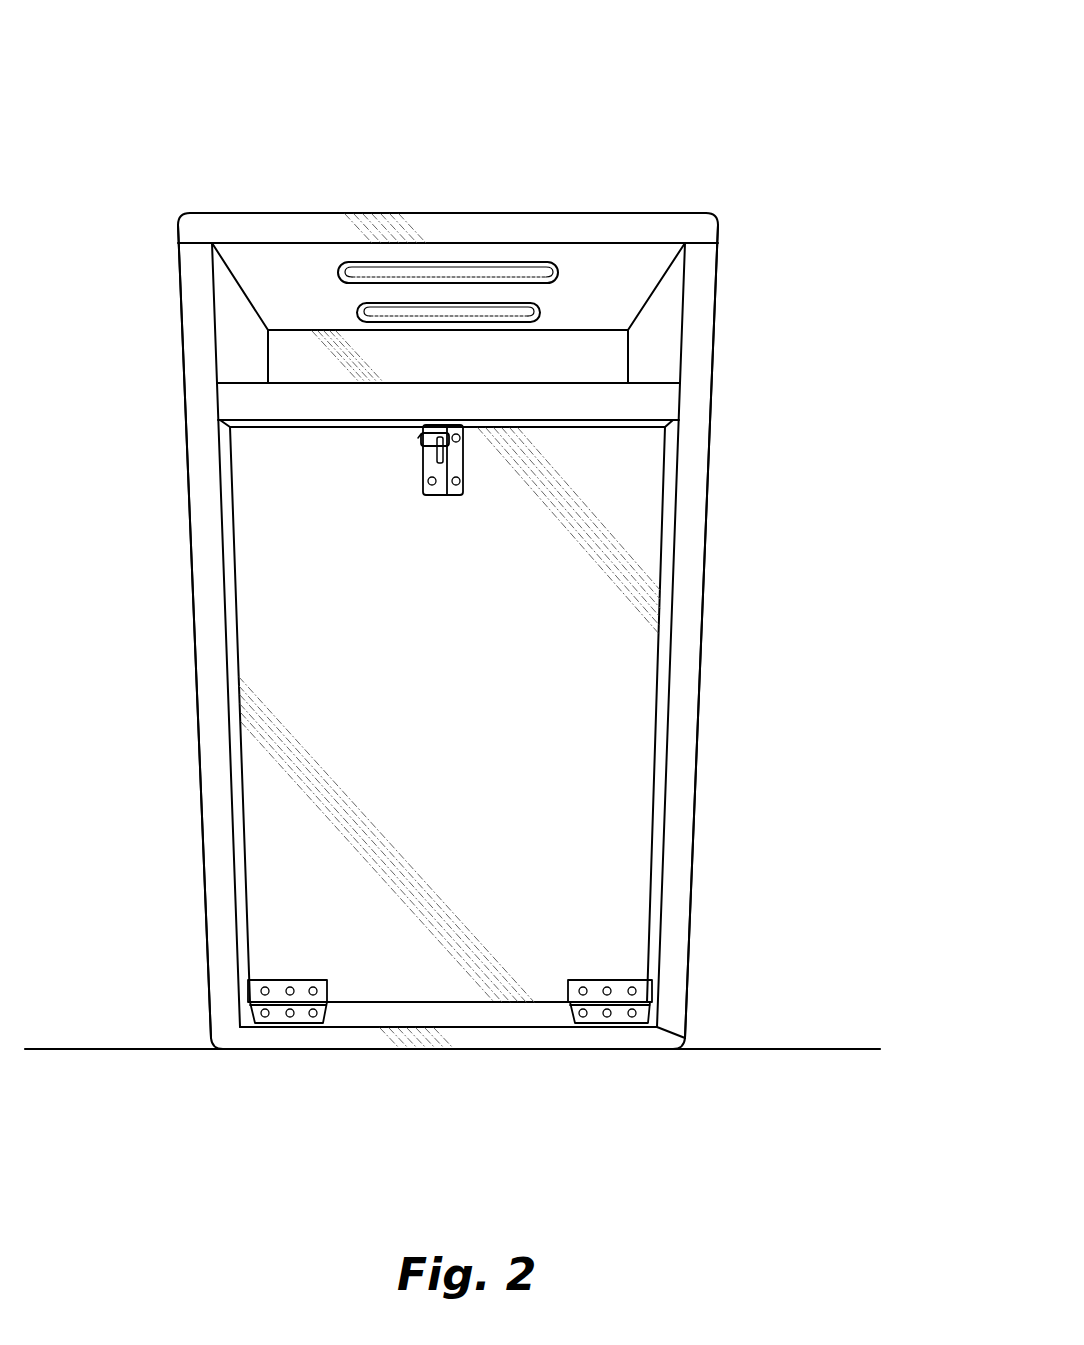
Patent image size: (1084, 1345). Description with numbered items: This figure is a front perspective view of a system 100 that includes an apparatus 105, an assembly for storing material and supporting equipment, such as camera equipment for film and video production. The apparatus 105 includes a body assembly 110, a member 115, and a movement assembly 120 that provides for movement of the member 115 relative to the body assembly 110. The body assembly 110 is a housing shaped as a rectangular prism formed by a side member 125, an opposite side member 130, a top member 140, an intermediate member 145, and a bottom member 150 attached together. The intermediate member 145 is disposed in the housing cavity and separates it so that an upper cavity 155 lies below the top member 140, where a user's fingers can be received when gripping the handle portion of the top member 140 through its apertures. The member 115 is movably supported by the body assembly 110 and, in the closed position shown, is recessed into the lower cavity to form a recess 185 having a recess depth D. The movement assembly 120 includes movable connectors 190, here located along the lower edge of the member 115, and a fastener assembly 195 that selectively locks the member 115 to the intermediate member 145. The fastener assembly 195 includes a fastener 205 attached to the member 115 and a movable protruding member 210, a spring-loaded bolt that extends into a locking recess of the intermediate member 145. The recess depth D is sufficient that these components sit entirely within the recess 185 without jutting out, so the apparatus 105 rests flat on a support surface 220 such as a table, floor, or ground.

The system 100 is at (452, 580).
The apparatus 105 is at (484, 639).
The body assembly 110 is at (516, 188).
The member 115 is at (465, 714).
The movement assembly 120 is at (267, 1033).
The side member 125 is at (213, 738).
The side member 130 is at (683, 658).
The top member 140 is at (257, 230).
The intermediate member 145 is at (308, 390).
The bottom member 150 is at (606, 1038).
The cavity 155 is at (473, 360).
The recess 185 is at (353, 828).
The movable connector 190 is at (558, 1005).
The fastener assembly 195 is at (401, 523).
The fastener 205 is at (428, 492).
The movable protruding member 210 is at (420, 440).
The support surface 220 is at (745, 1049).
The recess depth D is at (355, 1005).